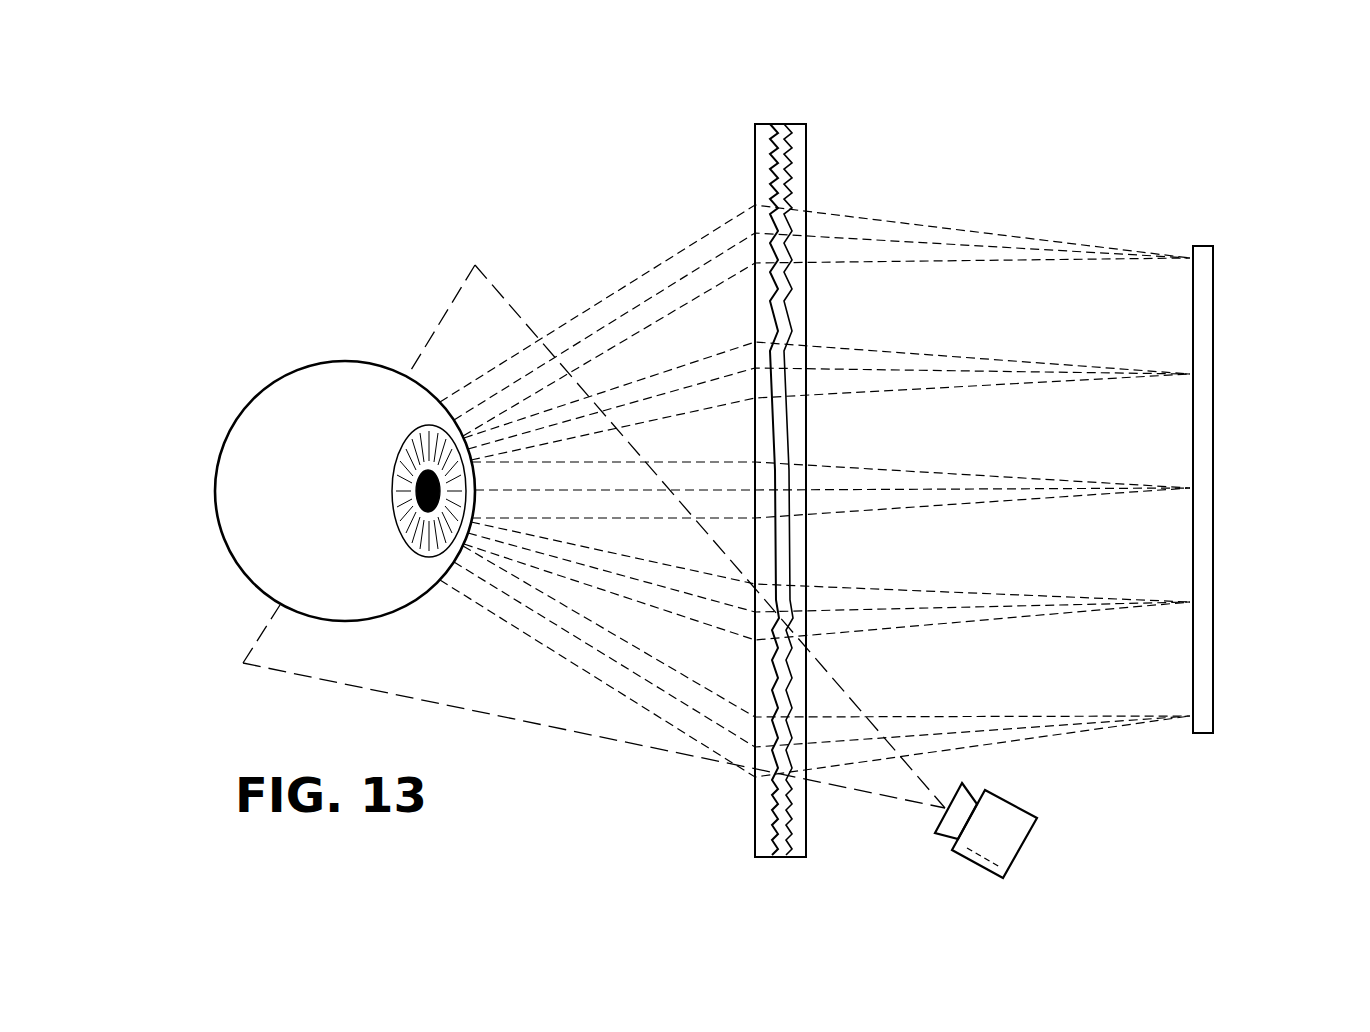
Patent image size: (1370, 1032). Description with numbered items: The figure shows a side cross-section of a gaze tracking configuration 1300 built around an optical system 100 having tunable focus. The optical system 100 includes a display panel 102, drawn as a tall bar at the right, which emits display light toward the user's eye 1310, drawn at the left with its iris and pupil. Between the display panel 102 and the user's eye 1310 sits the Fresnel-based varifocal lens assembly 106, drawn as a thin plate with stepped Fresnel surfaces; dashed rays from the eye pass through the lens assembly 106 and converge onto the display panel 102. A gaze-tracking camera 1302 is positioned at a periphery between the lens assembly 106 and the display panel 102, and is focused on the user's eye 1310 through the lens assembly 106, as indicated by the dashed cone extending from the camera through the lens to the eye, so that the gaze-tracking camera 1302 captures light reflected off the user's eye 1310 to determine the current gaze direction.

The gaze tracking configuration 1300 is at (472, 137).
The optical system 100 is at (878, 136).
The lens assembly 106 is at (757, 100).
The display panel 102 is at (1215, 442).
The user's eye 1310 is at (345, 360).
The gaze-tracking camera 1302 is at (971, 868).